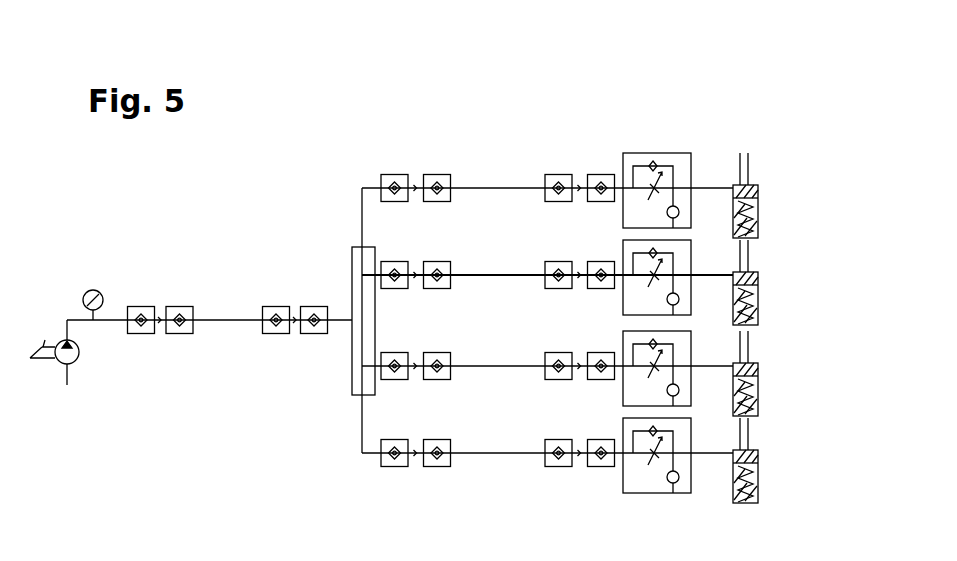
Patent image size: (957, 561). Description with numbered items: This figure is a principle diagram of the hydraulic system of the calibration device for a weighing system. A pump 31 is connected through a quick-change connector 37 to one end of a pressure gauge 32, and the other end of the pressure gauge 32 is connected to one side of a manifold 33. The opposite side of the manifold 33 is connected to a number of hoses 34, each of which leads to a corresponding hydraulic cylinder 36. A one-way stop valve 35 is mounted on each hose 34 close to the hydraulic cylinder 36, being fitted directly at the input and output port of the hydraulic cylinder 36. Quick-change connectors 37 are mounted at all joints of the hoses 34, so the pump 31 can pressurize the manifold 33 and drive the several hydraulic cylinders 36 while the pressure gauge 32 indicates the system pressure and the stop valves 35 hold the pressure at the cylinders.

The pump 31 is at (62, 343).
The pressure gauge 32 is at (91, 289).
The manifold 33 is at (356, 355).
The hoses 34 is at (227, 320).
The one-way stop valve 35 is at (657, 153).
The hydraulic cylinder 36 is at (757, 198).
The quick-change connector 37 is at (173, 307).